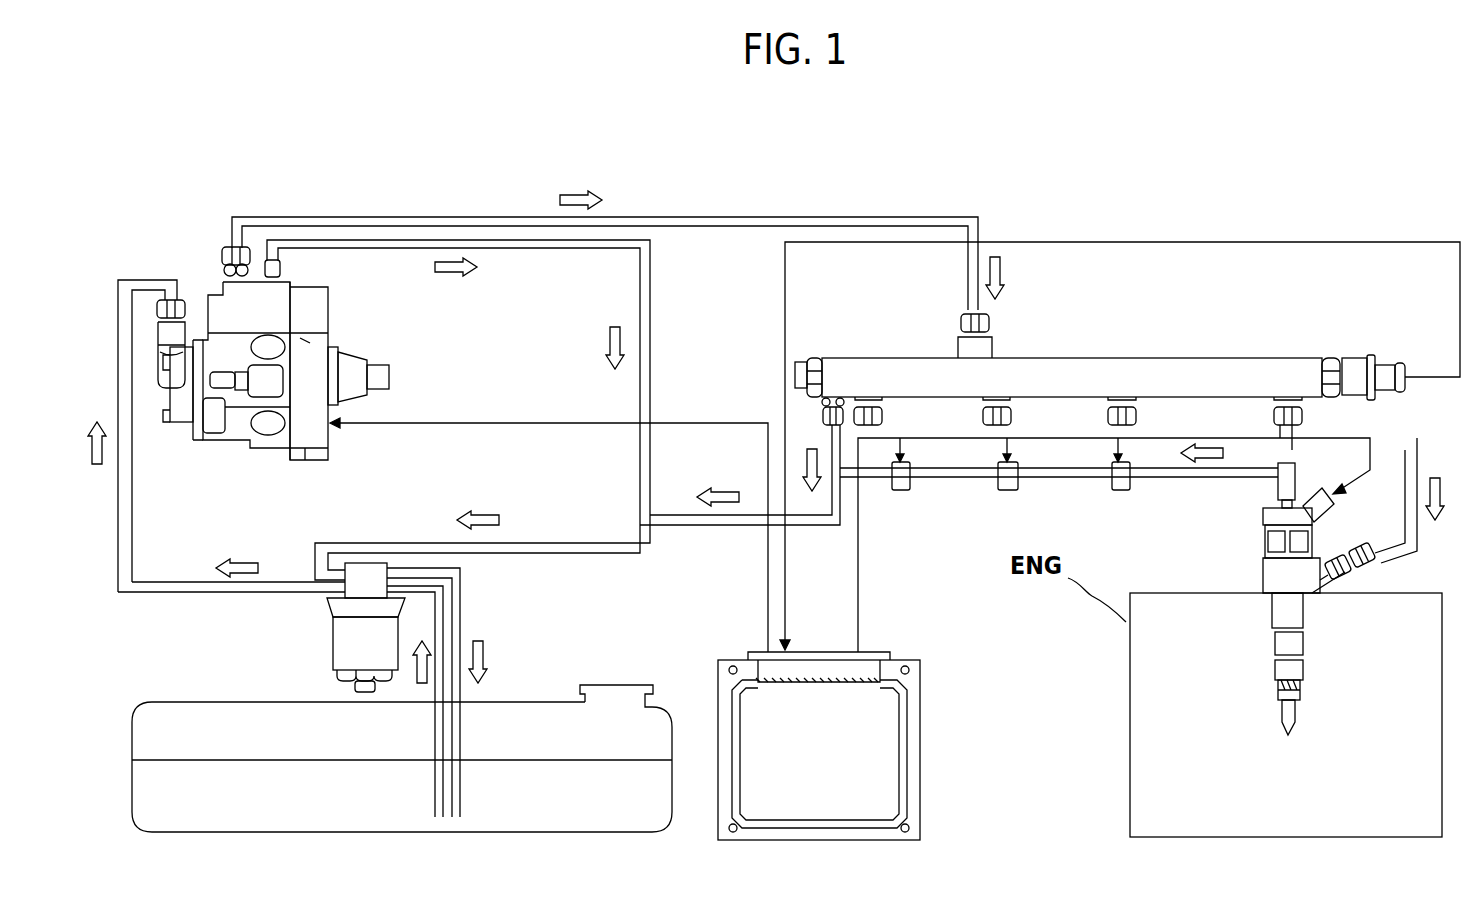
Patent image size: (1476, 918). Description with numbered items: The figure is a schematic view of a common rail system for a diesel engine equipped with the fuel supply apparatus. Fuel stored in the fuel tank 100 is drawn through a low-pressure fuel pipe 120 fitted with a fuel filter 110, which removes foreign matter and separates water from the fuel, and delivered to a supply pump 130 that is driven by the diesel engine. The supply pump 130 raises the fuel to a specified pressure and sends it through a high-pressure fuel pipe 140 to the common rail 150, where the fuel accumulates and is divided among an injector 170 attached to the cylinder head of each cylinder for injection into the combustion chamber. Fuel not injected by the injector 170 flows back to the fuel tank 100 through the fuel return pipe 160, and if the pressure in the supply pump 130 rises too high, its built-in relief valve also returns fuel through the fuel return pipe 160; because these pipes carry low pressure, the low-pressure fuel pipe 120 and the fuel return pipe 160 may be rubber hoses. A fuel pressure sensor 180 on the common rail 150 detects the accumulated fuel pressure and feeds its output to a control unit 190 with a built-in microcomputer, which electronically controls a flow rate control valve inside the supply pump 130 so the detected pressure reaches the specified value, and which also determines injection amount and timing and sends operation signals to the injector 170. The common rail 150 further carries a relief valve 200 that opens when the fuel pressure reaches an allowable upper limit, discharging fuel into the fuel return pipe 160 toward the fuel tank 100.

The fuel tank 100 is at (514, 702).
The fuel filter 110 is at (334, 646).
The low-pressure fuel pipe 120 is at (134, 522).
The supply pump 130 is at (334, 318).
The high-pressure fuel pipe 140 is at (706, 216).
The common rail 150 is at (1091, 357).
The fuel return pipe 160 is at (653, 320).
The injector 170 is at (1262, 562).
The fuel pressure sensor 180 is at (1363, 357).
The control unit 190 is at (903, 660).
The relief valve 200 is at (820, 346).